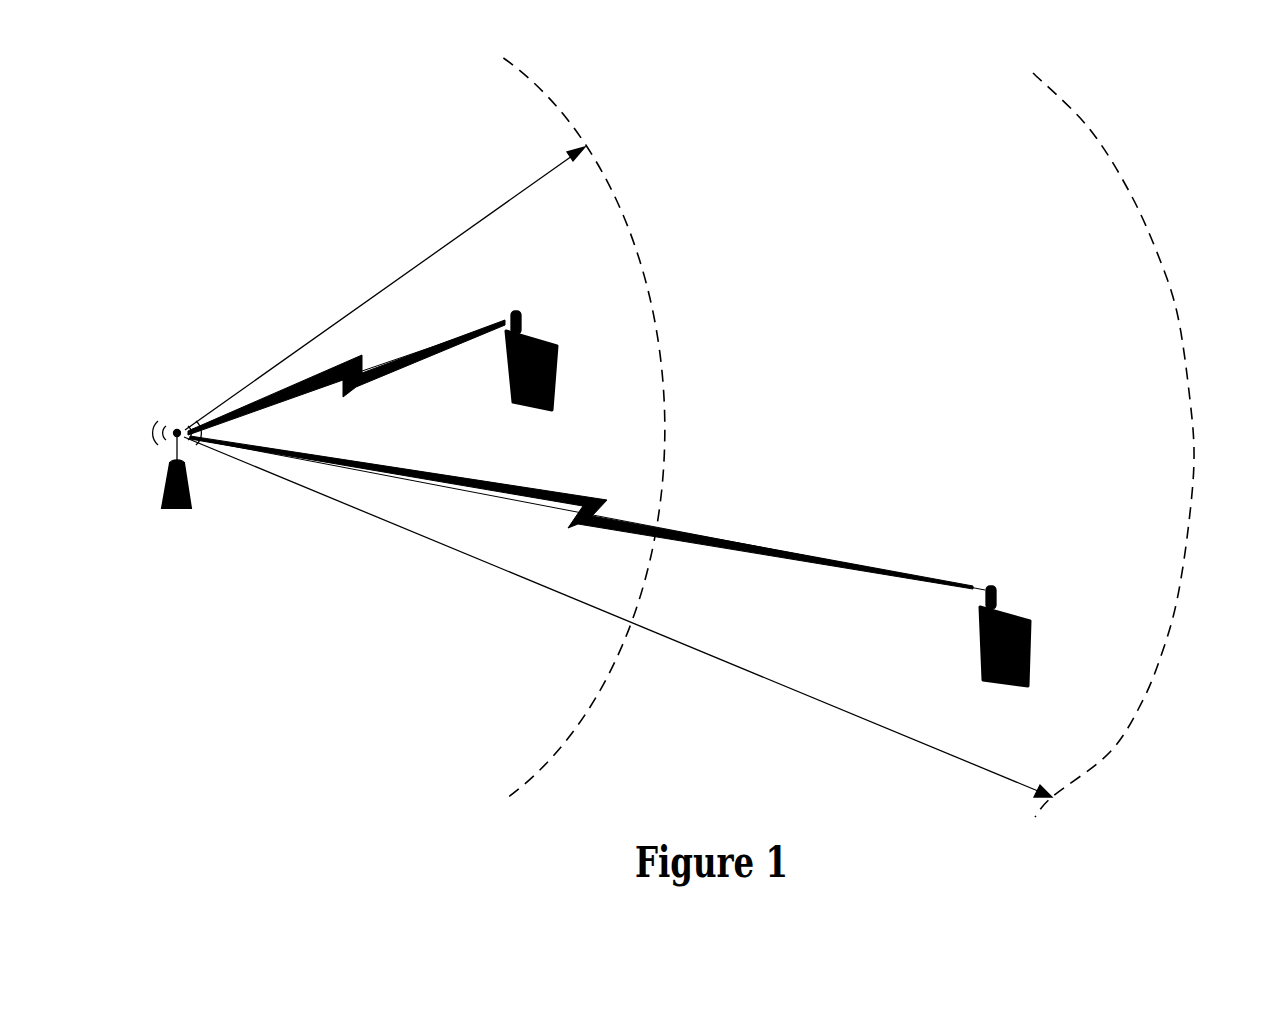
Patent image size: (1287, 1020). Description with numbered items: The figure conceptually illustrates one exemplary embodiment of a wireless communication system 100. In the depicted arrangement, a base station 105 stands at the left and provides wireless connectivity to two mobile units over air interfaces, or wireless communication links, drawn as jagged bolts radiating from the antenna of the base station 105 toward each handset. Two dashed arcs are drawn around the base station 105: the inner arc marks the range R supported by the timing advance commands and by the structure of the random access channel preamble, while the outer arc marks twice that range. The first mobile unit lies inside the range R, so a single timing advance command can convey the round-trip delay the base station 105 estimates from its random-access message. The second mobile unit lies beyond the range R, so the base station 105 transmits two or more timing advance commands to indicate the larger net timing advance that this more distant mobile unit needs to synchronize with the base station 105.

The wireless communication system 100 is at (1200, 138).
The base station 105 is at (175, 512).